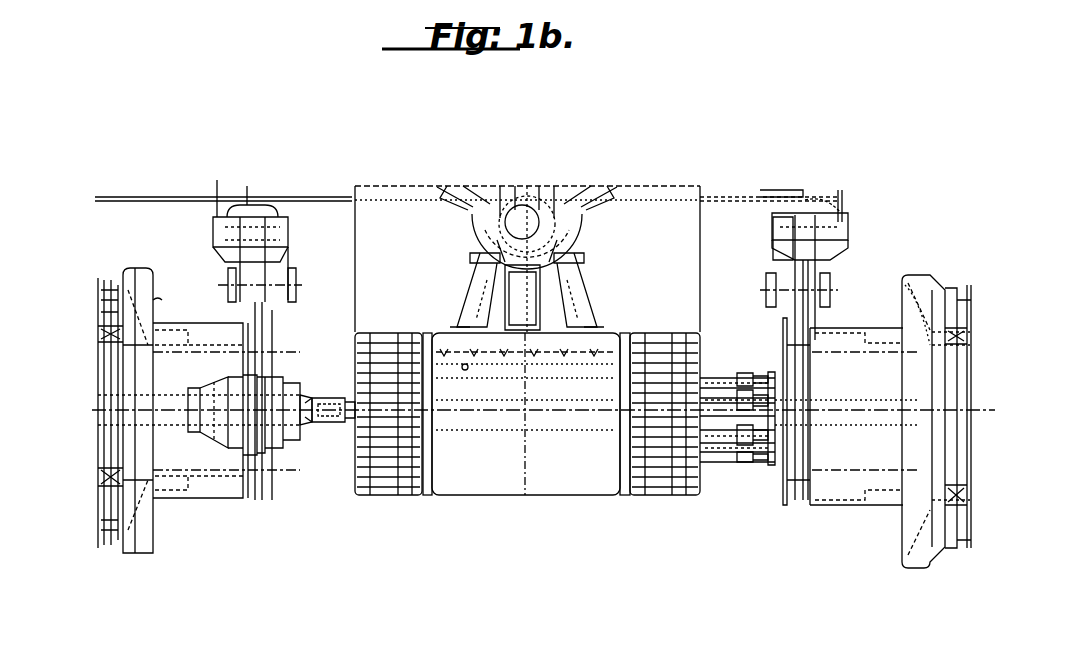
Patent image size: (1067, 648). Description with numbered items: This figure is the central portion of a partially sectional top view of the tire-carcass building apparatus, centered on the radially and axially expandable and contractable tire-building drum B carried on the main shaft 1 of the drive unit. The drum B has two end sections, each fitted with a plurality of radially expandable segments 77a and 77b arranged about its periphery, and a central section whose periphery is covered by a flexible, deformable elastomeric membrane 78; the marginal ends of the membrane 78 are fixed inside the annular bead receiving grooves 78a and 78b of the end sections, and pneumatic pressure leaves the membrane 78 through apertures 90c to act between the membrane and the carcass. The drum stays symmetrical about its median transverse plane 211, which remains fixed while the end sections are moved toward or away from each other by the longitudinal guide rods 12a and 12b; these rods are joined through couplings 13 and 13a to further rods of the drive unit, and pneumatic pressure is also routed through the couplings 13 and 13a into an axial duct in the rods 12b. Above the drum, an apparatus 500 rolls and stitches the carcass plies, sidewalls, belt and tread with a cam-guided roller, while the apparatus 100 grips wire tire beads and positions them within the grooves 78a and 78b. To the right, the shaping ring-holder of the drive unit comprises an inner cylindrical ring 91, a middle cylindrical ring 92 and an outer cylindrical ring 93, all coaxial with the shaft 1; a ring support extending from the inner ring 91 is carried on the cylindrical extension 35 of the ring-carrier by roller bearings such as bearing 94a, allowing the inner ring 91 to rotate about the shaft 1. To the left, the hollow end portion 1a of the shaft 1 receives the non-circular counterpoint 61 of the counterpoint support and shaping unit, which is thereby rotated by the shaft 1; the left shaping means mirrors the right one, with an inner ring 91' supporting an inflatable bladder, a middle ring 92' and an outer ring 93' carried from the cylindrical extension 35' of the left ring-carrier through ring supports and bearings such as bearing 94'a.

The outer ring 93' is at (150, 389).
The middle ring 92' is at (177, 284).
The roller bearing 94'a is at (75, 413).
The cylindrical extension 35' is at (79, 499).
The inner ring 91' is at (232, 421).
The counterpoint 61 is at (310, 396).
The hollow end portion of main shaft 1a is at (330, 422).
The bead gripping apparatus 100 is at (304, 266).
The rolling and stitching apparatus 500 is at (596, 240).
The radially expandable segments 77a is at (400, 497).
The annular bead receiving groove 78a is at (428, 497).
The membrane 78 is at (570, 497).
The tire-building drum B is at (490, 506).
The median transverse plane 211 is at (525, 463).
The apertures 90c is at (467, 370).
The annular bead receiving groove 78b is at (626, 497).
The radially expandable segments 77b is at (672, 497).
The longitudinal guide rods 12b is at (712, 378).
The longitudinal guide rods 12a is at (720, 445).
The coupling 13a is at (751, 373).
The coupling 13 is at (778, 460).
The inner cylindrical ring 91 is at (805, 435).
The main shaft 1 is at (866, 438).
The middle cylindrical ring 92 is at (938, 409).
The roller bearing 94a is at (948, 337).
The cylindrical extension 35 is at (976, 482).
The outer cylindrical ring 93 is at (937, 453).